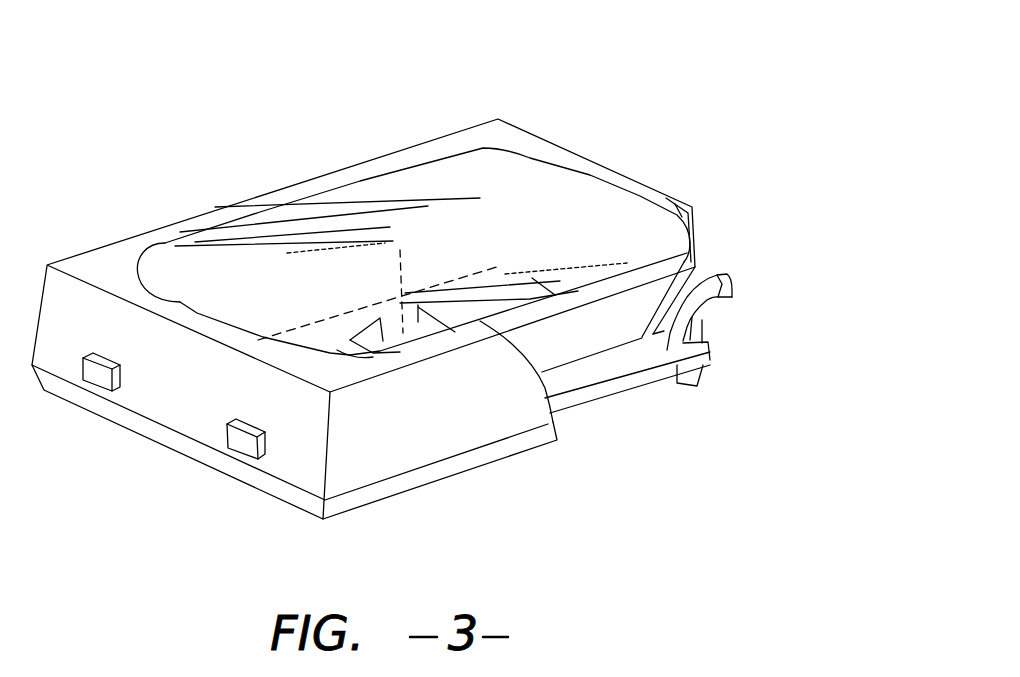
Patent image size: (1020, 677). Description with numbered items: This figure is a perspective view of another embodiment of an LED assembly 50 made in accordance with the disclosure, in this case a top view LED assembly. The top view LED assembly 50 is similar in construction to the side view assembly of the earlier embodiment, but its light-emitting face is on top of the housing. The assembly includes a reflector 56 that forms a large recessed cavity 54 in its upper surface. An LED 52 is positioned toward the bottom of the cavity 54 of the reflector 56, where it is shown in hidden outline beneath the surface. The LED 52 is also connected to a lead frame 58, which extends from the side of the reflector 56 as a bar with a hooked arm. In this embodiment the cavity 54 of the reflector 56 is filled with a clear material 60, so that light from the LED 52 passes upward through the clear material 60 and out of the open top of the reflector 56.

The LED assembly 50 is at (577, 92).
The LED 52 is at (407, 313).
The cavity 54 is at (230, 268).
The reflector 56 is at (197, 405).
The lead frame 58 is at (608, 387).
The clear material 60 is at (458, 170).